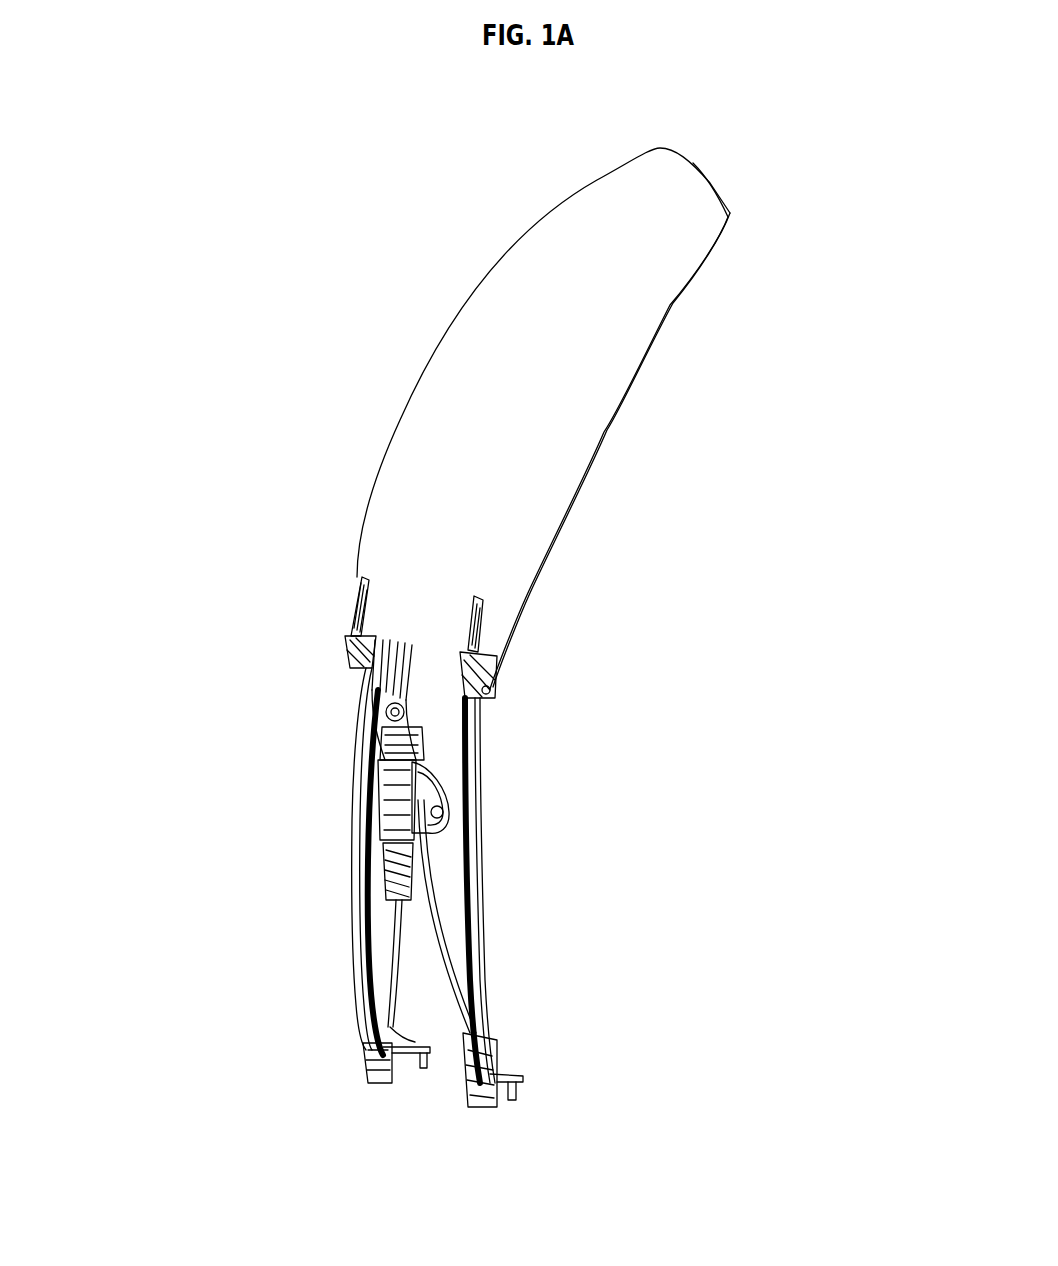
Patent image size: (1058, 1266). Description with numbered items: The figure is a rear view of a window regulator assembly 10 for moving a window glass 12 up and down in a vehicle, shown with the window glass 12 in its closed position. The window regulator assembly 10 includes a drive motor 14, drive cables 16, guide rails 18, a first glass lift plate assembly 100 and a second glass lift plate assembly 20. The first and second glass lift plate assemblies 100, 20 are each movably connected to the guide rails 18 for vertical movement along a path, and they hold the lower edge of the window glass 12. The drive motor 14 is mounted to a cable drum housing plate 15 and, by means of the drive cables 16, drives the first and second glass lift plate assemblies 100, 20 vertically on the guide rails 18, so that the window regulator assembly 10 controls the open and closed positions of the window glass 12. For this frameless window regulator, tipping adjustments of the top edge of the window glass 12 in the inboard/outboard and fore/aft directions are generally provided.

The window regulator assembly 10 is at (227, 783).
The window glass 12 is at (605, 318).
The drive motor 14 is at (417, 733).
The cable drum housing plate 15 is at (447, 813).
The drive cables 16 is at (450, 997).
The guide rails 18 is at (477, 877).
The second glass lift plate assembly 20 is at (357, 637).
The first glass lift plate assembly 100 is at (357, 637).